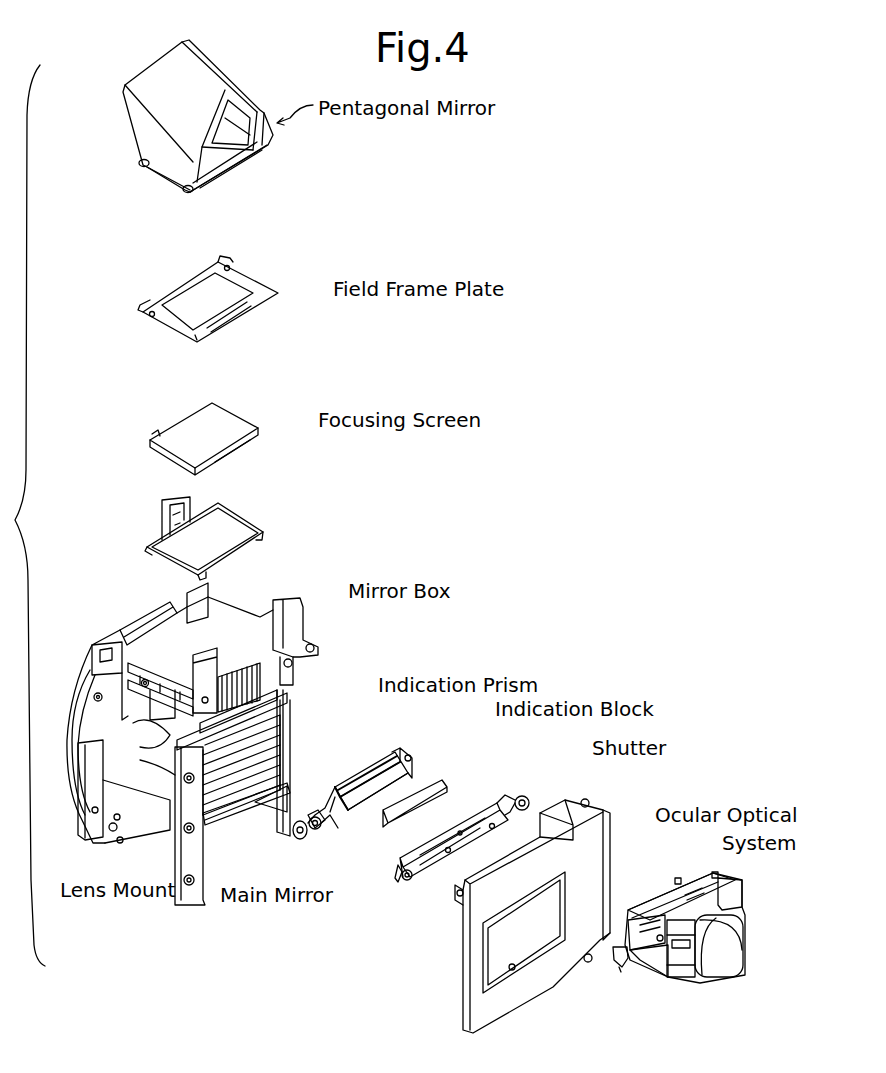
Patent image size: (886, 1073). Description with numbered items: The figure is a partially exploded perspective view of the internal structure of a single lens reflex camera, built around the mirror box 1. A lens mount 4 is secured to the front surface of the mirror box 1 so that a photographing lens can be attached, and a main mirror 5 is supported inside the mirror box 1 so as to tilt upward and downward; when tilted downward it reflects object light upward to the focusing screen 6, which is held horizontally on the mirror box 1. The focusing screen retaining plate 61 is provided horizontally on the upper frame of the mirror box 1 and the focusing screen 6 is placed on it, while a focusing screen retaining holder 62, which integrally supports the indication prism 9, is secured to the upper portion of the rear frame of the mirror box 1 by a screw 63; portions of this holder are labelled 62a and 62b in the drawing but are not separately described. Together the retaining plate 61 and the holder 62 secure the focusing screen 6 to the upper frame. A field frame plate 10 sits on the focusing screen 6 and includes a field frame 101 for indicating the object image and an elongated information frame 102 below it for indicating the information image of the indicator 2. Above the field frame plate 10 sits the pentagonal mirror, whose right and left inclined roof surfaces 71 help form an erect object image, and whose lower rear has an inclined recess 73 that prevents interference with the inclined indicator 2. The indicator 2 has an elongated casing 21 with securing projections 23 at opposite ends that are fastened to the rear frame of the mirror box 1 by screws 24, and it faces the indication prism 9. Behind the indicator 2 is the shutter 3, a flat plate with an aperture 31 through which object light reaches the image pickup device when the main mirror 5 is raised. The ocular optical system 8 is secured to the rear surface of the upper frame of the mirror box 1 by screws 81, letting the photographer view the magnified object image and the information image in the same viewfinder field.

The mirror box 1 is at (300, 620).
The indicator 2 is at (463, 816).
The shutter 3 is at (536, 898).
The lens mount 4 is at (78, 840).
The main mirror 5 is at (230, 800).
The focusing screen 6 is at (272, 434).
The ocular optical system 8 is at (676, 918).
The indication prism 9 is at (437, 780).
The field frame plate 10 is at (229, 292).
The casing 21 is at (462, 835).
The securing projections 23 is at (527, 800).
The screws 24 is at (510, 795).
The aperture 31 is at (514, 972).
The focusing screen retaining plate 61 is at (258, 528).
The focusing screen retaining holder 62 is at (360, 797).
The lever upper portion 62a is at (370, 768).
The lever lower portion 62b is at (368, 803).
The screw 63 is at (312, 808).
The inclined roof surfaces 71 is at (207, 95).
The inclined recess 73 is at (262, 148).
The screws 81 is at (622, 972).
The field frame 101 is at (232, 288).
The information frame 102 is at (237, 318).